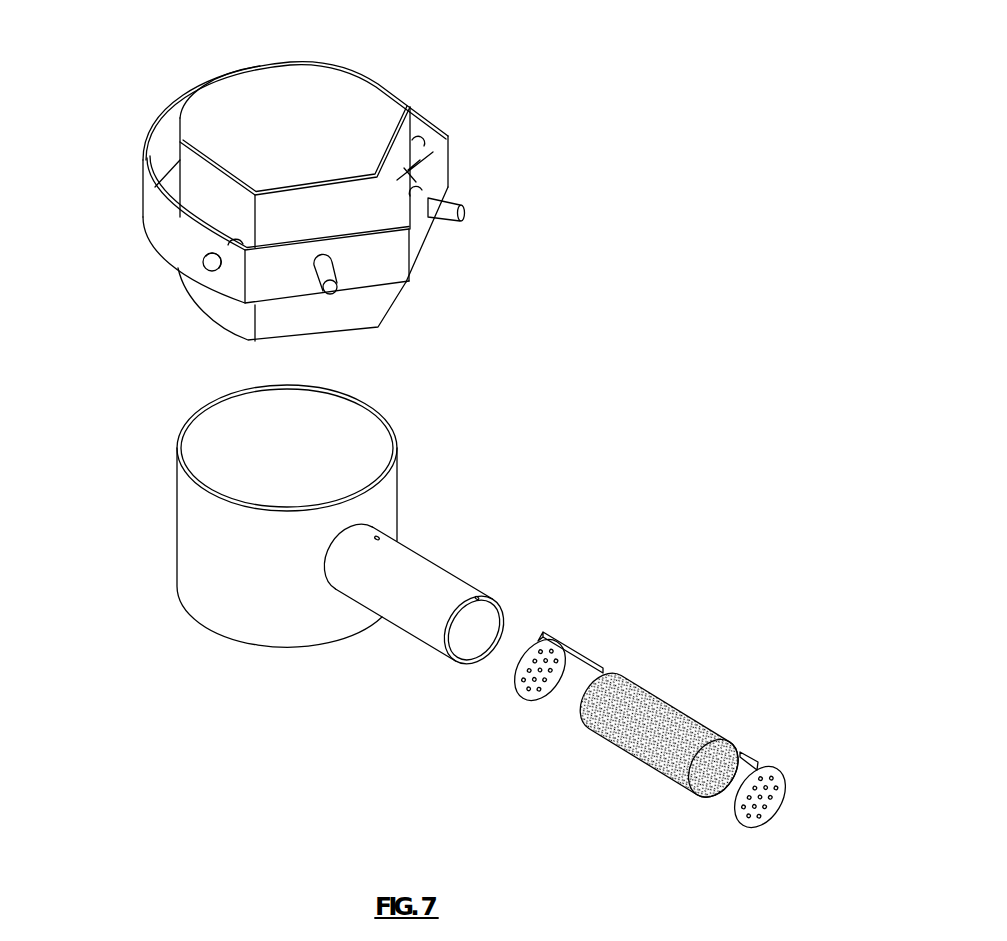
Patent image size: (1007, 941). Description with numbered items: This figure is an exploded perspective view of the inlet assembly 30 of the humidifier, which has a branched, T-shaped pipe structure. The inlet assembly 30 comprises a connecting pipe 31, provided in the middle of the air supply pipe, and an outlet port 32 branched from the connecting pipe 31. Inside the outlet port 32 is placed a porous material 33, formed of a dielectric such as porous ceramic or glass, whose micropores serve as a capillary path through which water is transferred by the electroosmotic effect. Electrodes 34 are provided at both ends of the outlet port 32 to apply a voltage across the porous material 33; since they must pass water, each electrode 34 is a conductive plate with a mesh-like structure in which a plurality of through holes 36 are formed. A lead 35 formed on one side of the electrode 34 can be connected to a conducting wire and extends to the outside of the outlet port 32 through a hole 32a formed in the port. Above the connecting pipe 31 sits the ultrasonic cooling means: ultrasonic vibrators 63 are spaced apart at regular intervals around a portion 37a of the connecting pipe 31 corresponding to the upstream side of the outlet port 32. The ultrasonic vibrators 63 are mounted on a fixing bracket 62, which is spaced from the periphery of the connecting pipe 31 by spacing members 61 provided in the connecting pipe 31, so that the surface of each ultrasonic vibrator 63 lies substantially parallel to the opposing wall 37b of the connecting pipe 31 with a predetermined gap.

The inlet assembly 30 is at (414, 589).
The connecting pipe 31 is at (177, 493).
The outlet port 32 is at (449, 552).
The hole 32a is at (378, 536).
The porous material 33 is at (673, 712).
The electrode 34 is at (513, 729).
The lead 35 is at (587, 654).
The through holes 36 is at (542, 692).
The portion of the connecting pipe 37a is at (185, 287).
The wall of the connecting pipe 37b is at (398, 180).
The spacing member 61 is at (427, 140).
The fixing bracket 62 is at (158, 128).
The ultrasonic vibrator 63 is at (418, 190).